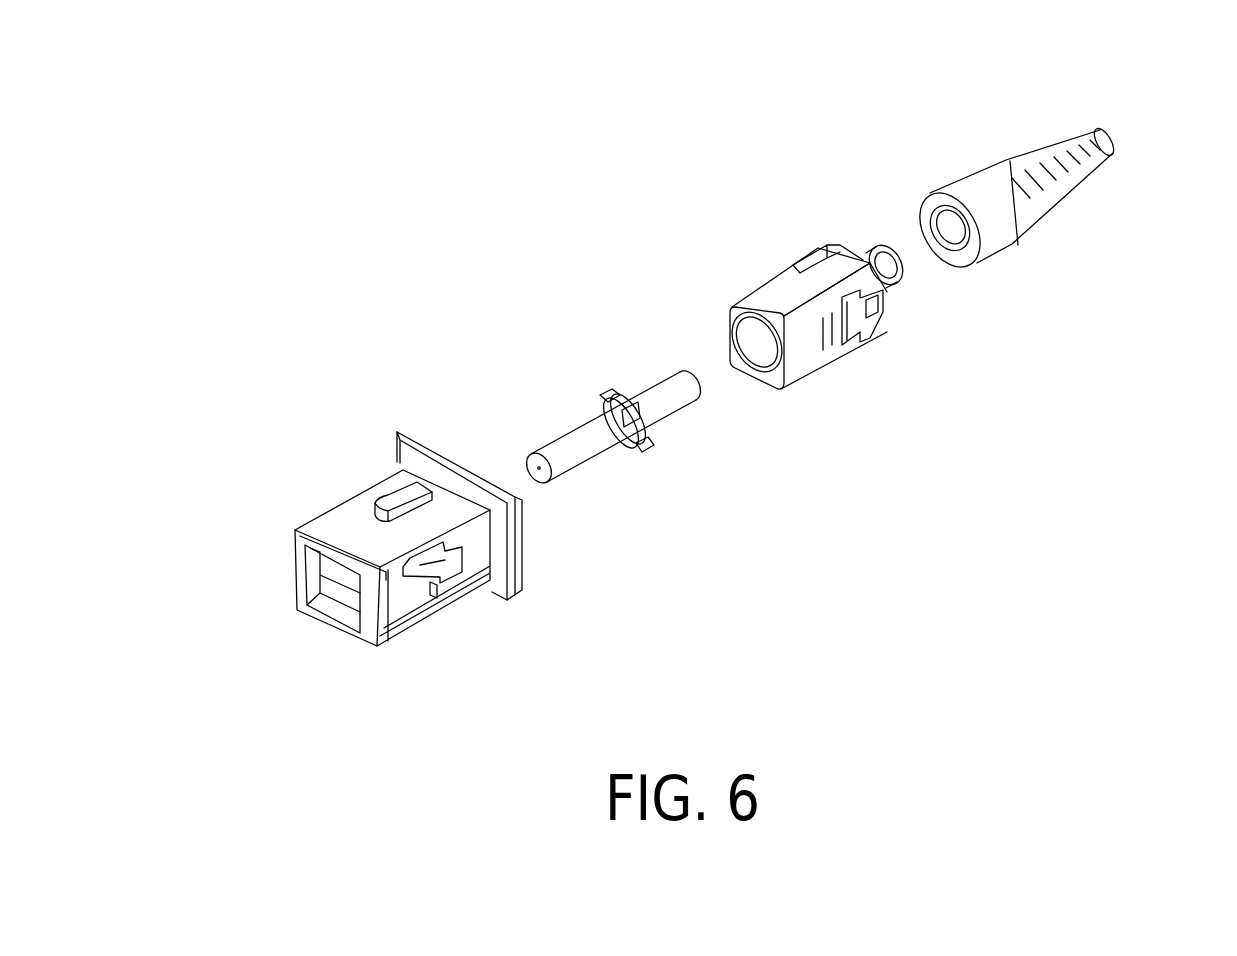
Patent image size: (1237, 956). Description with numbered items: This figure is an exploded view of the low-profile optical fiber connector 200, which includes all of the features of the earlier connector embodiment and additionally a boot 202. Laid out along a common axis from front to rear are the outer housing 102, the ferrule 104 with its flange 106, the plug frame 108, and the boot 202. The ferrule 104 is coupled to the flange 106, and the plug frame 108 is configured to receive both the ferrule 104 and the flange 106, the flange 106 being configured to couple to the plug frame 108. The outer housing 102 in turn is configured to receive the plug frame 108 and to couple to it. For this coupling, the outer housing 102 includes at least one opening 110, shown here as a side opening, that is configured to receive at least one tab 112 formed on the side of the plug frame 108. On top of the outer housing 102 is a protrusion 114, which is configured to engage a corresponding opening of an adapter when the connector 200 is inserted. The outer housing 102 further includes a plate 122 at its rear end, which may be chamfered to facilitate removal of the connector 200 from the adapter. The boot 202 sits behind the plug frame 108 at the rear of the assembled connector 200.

The optical fiber connector 200 is at (486, 163).
The outer housing 102 is at (332, 526).
The ferrule 104 is at (560, 437).
The flange 106 is at (630, 407).
The plug frame 108 is at (797, 292).
The opening 110 is at (403, 573).
The tab 112 is at (880, 320).
The protrusion 114 is at (390, 497).
The plate 122 is at (525, 545).
The boot 202 is at (1040, 183).